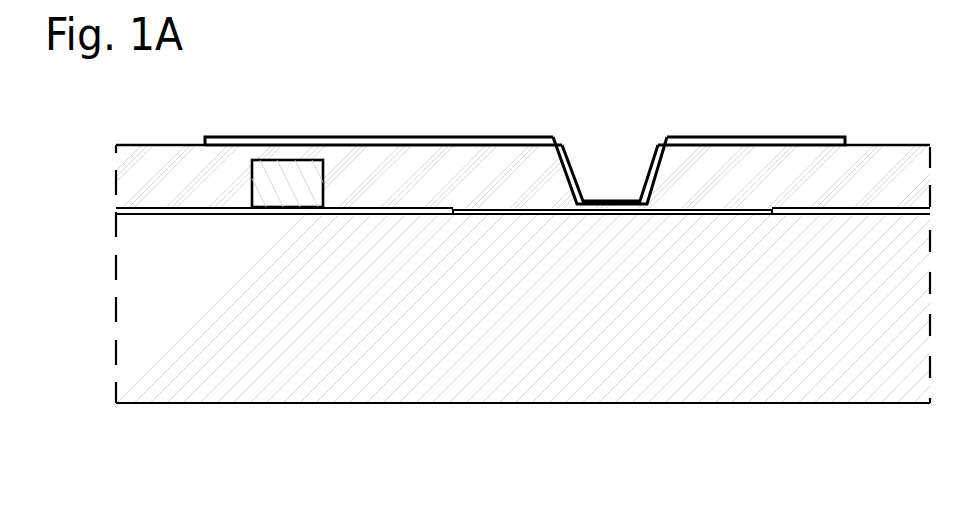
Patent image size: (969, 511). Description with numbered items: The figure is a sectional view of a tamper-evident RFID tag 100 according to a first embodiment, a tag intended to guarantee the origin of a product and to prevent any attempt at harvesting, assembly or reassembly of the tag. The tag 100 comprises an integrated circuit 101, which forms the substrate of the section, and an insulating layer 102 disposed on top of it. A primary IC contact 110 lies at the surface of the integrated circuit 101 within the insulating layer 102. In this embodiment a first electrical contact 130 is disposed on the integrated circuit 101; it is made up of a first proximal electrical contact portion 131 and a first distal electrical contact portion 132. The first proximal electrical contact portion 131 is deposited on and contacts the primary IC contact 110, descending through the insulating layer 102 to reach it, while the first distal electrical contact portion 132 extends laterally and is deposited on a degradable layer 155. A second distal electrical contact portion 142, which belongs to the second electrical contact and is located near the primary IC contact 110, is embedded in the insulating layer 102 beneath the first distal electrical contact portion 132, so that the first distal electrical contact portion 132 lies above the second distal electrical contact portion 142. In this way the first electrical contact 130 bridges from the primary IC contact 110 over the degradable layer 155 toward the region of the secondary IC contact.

The tamper-evident RFID tag 100 is at (780, 56).
The integrated circuit 101 is at (782, 304).
The insulating layer 102 is at (118, 210).
The primary IC contact 110 is at (542, 213).
The first electrical contact 130 is at (525, 110).
The first proximal electrical contact portion 131 is at (610, 141).
The first distal electrical contact portion 132 is at (307, 137).
The second distal electrical contact portion 142 is at (272, 178).
The degradable layer 155 is at (874, 172).